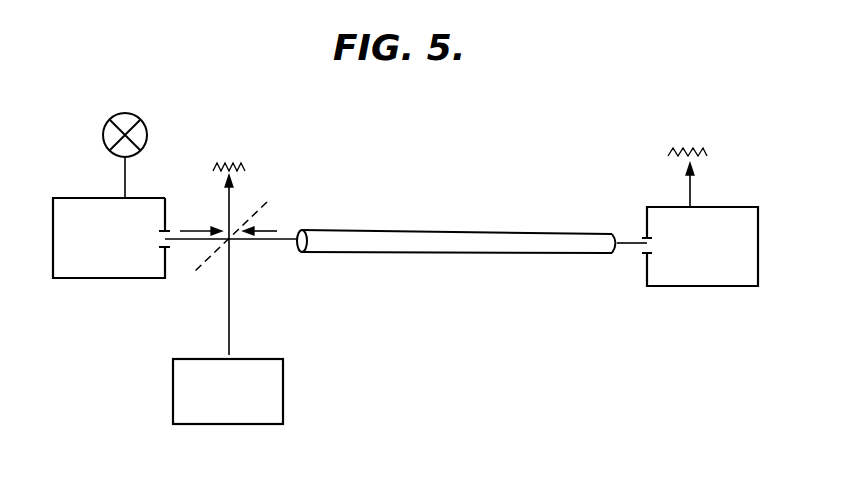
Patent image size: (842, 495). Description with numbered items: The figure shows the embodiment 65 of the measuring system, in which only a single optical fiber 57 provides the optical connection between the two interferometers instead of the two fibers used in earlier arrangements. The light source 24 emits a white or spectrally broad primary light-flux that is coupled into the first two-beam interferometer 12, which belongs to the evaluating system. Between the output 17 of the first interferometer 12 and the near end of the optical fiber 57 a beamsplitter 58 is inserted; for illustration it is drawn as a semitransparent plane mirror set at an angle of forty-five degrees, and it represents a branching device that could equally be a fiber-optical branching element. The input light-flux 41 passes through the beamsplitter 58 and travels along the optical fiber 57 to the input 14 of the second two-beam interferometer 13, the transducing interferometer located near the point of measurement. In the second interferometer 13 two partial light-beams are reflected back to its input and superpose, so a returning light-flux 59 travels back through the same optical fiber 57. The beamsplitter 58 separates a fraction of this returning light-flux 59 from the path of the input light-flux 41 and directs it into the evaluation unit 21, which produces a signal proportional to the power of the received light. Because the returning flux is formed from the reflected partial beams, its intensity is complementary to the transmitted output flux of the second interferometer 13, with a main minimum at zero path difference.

The first two-beam interferometer 12 is at (108, 278).
The light source 24 is at (146, 136).
The output of the first interferometer 17 is at (170, 231).
The input light-flux 41 is at (194, 231).
The returning light-flux 59 is at (277, 231).
The beamsplitter 58 is at (216, 258).
The optical fiber 57 is at (402, 243).
The embodiment 65 is at (412, 168).
The input of the second interferometer 14 is at (644, 238).
The second two-beam interferometer 13 is at (701, 286).
The evaluation unit 21 is at (173, 402).